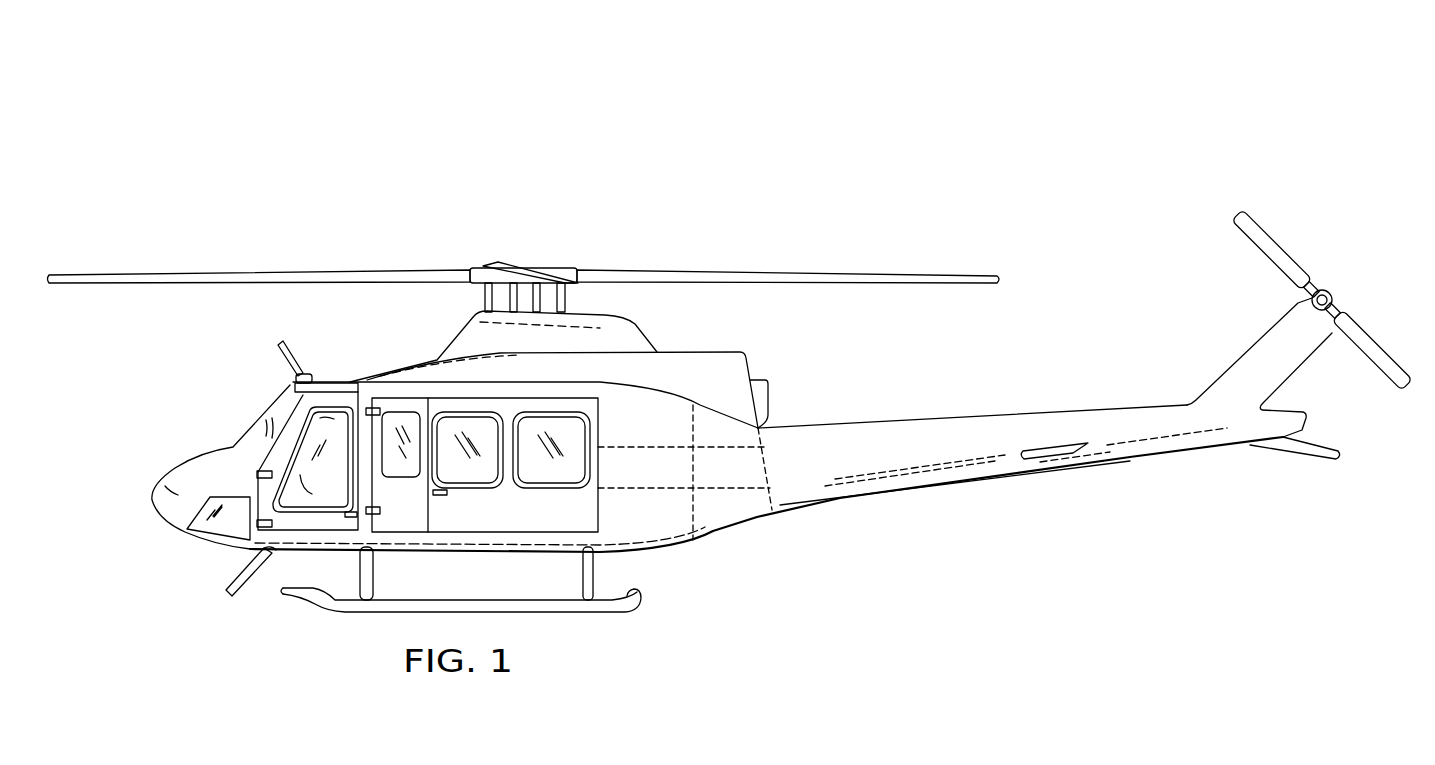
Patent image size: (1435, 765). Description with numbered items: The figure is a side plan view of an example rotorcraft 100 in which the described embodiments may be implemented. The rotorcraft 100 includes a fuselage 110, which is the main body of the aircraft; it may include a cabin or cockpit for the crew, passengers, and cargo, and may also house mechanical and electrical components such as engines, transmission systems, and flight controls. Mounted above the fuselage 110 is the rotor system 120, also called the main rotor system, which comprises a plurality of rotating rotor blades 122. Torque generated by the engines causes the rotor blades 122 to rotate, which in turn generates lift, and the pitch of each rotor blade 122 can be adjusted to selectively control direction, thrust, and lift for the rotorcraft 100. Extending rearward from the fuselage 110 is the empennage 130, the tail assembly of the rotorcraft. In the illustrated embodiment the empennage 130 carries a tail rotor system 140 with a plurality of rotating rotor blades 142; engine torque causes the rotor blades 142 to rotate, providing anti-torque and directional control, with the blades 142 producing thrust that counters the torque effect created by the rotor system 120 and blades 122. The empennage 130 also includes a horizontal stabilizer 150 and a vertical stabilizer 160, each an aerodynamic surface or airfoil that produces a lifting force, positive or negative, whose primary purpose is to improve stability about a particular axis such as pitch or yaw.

The rotorcraft 100 is at (413, 136).
The fuselage 110 is at (657, 544).
The rotor system 120 is at (503, 252).
The rotor blades 122 is at (837, 272).
The empennage 130 is at (934, 490).
The tail rotor system 140 is at (1330, 280).
The rotor blades 142 is at (1373, 333).
The horizontal stabilizer 150 is at (1054, 460).
The vertical stabilizer 160 is at (1243, 352).